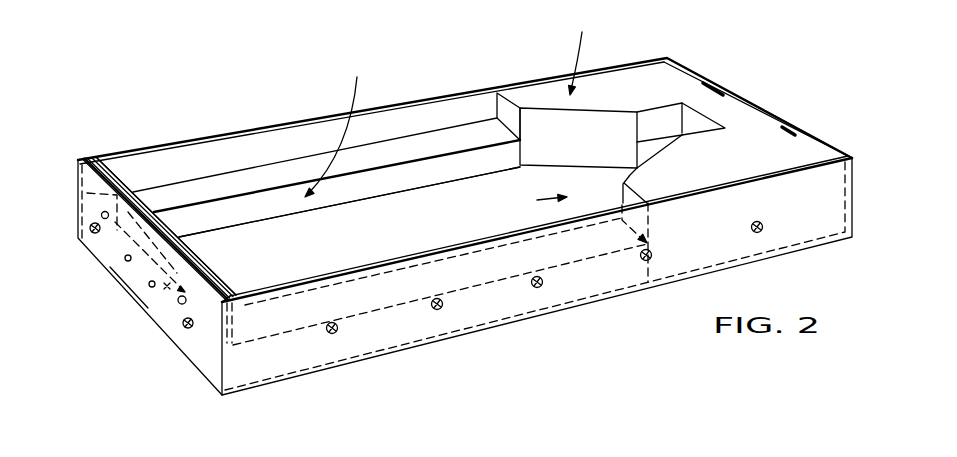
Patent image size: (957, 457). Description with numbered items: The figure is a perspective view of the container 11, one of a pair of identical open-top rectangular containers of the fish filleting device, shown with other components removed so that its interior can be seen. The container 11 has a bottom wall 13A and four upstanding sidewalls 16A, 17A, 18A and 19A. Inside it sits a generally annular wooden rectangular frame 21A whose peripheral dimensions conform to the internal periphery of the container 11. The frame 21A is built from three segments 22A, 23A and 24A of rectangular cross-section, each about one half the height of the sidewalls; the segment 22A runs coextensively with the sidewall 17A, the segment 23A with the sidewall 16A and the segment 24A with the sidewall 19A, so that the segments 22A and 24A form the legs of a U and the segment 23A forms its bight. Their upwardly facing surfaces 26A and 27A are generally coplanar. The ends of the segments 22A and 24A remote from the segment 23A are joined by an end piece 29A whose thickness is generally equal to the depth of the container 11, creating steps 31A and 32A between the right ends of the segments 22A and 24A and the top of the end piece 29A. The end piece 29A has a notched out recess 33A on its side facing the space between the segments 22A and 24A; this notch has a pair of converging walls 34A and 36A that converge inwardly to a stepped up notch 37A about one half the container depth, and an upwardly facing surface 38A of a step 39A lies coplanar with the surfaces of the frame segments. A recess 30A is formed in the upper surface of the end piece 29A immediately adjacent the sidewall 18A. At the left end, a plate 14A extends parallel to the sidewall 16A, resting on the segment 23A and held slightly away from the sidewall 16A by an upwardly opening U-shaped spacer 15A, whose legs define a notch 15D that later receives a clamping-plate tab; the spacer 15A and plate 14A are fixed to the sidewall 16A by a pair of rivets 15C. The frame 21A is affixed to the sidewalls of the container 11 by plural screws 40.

The container 11 is at (366, 366).
The bottom wall 13A is at (349, 212).
The plate 14A is at (116, 188).
The upwardly opening U-shaped spacer 15A is at (160, 305).
The rivets 15C is at (107, 220).
The notch 15D is at (182, 240).
The sidewall 16A is at (130, 282).
The sidewall 17A is at (207, 153).
The sidewall 18A is at (770, 110).
The sidewall 19A is at (457, 313).
The rectangular frame 21A is at (342, 121).
The segment 22A is at (410, 175).
The segment 23A is at (228, 283).
The segment 24A is at (592, 278).
The upwardly facing surface 26A is at (412, 145).
The upwardly facing surface 27A is at (222, 272).
The end piece 29A is at (586, 51).
The recess 30A is at (718, 90).
The step 31A is at (503, 112).
The step 32A is at (623, 200).
The notched out recess 33A is at (531, 199).
The converging wall 34A is at (553, 128).
The converging wall 36A is at (630, 175).
The stepped up notch 37A is at (660, 122).
The upwardly facing surface 38A is at (678, 147).
The step 39A is at (642, 160).
The screws 40 is at (90, 232).